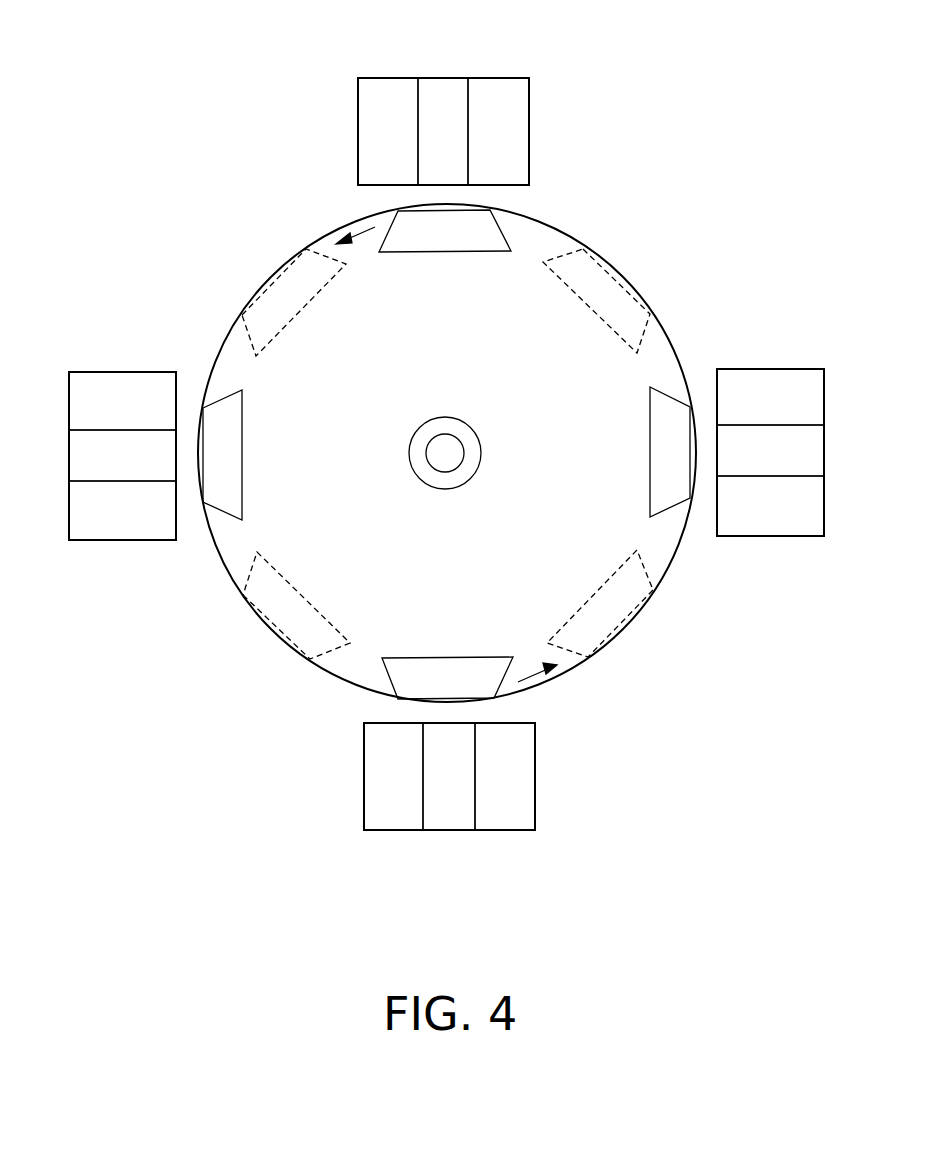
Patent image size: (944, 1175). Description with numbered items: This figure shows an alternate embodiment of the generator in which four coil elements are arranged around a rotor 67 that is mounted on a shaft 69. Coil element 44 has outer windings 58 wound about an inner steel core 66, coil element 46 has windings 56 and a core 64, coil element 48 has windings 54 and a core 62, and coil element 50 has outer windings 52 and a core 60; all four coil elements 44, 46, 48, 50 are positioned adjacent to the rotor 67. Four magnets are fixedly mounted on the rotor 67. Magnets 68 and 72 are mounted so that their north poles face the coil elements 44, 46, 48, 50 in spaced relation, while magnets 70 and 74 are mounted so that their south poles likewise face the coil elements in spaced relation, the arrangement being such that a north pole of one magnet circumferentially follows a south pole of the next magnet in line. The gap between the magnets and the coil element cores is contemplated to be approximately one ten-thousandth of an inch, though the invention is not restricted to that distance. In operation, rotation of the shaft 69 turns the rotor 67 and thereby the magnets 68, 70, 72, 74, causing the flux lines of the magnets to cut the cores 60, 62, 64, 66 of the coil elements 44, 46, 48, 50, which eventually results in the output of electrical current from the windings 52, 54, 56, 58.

The coil element 44 is at (463, 97).
The coil element 46 is at (782, 419).
The coil element 48 is at (484, 795).
The coil element 50 is at (122, 490).
The outer windings 52 is at (122, 456).
The windings 54 is at (449, 776).
The windings 56 is at (770, 452).
The outer windings 58 is at (443, 131).
The core 60 is at (122, 455).
The core 62 is at (449, 776).
The core 64 is at (770, 450).
The inner steel core 66 is at (443, 131).
The rotor 67 is at (543, 337).
The magnet 68 is at (228, 410).
The shaft 69 is at (470, 480).
The magnet 70 is at (410, 677).
The magnet 72 is at (670, 488).
The magnet 74 is at (490, 230).